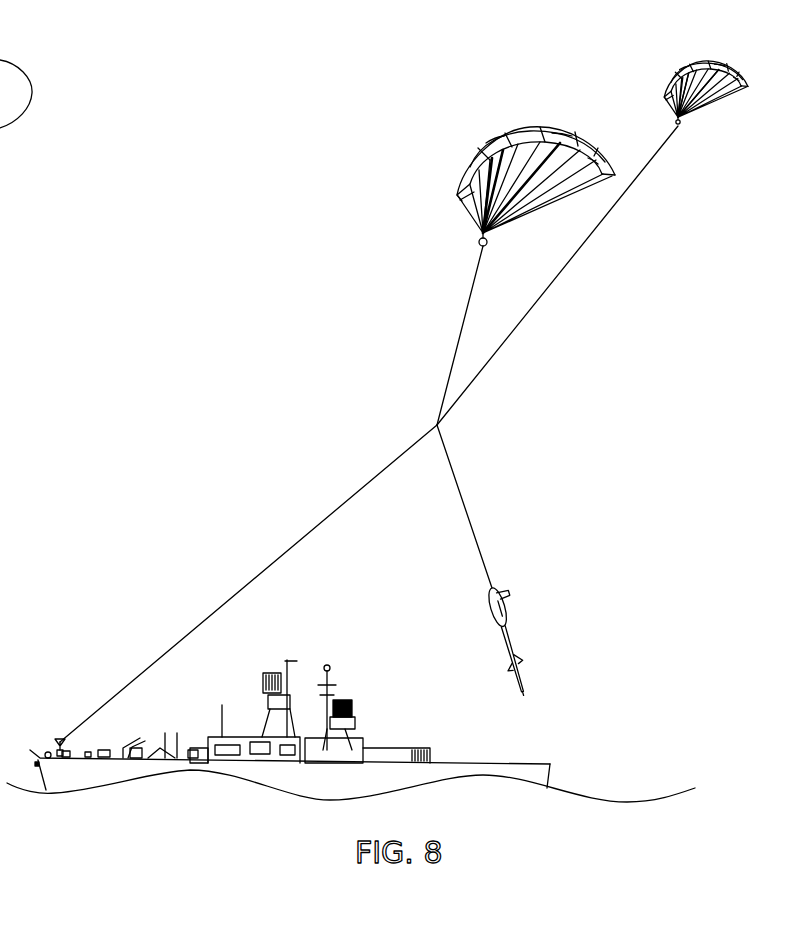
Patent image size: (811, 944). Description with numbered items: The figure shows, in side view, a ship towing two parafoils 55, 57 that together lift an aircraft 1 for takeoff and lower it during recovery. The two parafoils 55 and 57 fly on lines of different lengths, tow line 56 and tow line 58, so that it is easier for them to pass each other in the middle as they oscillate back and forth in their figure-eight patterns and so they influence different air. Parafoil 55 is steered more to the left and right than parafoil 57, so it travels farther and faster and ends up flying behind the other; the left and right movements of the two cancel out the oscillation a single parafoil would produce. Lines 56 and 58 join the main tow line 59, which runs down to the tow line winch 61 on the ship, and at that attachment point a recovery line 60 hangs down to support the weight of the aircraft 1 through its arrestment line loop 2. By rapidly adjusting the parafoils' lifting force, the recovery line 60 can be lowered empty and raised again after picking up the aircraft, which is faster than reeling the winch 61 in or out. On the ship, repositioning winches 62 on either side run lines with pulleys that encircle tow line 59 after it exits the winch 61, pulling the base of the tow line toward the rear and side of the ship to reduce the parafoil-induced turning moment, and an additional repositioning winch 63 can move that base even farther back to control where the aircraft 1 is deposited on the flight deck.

The aircraft 1 is at (523, 683).
The arrestment line loop 2 is at (495, 623).
The parafoil 55 is at (686, 66).
The tow line 56 is at (571, 266).
The parafoil 57 is at (490, 137).
The tow line 58 is at (477, 262).
The tow line 59 is at (278, 558).
The recovery line 60 is at (467, 512).
The tow line winch 61 is at (60, 741).
The repositioning winch 62 is at (267, 762).
The additional repositioning winch 63 is at (450, 763).